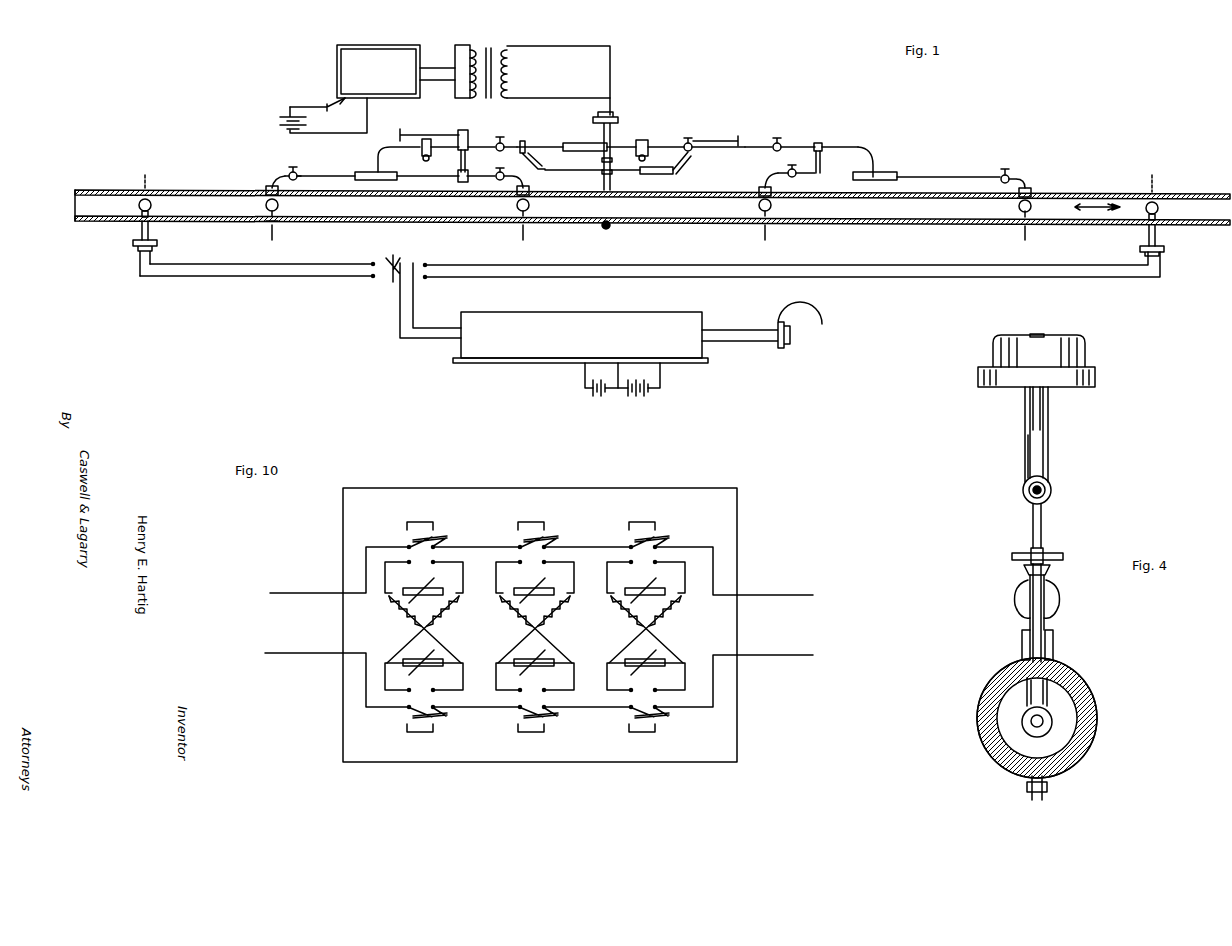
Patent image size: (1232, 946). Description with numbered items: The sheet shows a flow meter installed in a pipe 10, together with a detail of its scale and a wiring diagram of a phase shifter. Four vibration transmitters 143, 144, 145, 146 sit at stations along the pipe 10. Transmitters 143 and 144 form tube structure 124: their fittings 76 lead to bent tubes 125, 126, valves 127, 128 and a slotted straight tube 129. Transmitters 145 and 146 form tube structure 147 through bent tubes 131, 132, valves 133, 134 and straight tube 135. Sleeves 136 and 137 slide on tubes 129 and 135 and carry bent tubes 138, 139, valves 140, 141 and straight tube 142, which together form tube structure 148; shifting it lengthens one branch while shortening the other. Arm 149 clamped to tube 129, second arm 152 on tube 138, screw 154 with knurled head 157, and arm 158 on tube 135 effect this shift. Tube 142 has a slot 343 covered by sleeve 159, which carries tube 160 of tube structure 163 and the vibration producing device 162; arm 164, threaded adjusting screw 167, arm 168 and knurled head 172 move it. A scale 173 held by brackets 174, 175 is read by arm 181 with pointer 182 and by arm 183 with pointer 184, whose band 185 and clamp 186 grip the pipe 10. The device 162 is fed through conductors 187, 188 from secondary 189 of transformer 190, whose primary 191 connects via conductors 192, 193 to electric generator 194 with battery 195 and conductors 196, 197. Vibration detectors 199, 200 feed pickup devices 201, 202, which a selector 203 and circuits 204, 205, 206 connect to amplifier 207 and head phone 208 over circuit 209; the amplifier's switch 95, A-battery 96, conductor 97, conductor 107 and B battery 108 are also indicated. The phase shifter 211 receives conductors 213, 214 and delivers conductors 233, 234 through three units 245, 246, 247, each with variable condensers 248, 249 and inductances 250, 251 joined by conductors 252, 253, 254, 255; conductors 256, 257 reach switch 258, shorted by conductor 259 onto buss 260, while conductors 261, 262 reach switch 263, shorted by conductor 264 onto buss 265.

In FIG. 1, the pipe 10 is at (1075, 190).
In FIG. 4, the pipe 10 is at (1078, 692).
In FIG. 1, the fittings 76 is at (268, 188).
In FIG. 1, the switch 95 is at (586, 372).
In FIG. 1, the A-battery 96 is at (598, 398).
In FIG. 1, the conductor 97 is at (615, 391).
In FIG. 1, the conductor 107 is at (662, 385).
In FIG. 1, the B battery 108 is at (645, 398).
In FIG. 1, the tube structure 124 is at (333, 173).
In FIG. 1, the bent tube 125 is at (279, 177).
In FIG. 1, the bent tube 126 is at (520, 184).
In FIG. 1, the valve 127 is at (291, 171).
In FIG. 1, the valve 128 is at (496, 181).
In FIG. 1, the straight tube 129 is at (435, 175).
In FIG. 1, the bent tube 131 is at (772, 174).
In FIG. 4, the bent tube 131 is at (1028, 616).
In FIG. 1, the bent tube 132 is at (1022, 183).
In FIG. 1, the valve 133 is at (790, 172).
In FIG. 4, the valve 133 is at (1020, 592).
In FIG. 1, the valve 134 is at (1005, 170).
In FIG. 1, the straight tube 135 is at (926, 176).
In FIG. 1, the sleeve 136 is at (365, 172).
In FIG. 1, the sleeve 137 is at (886, 176).
In FIG. 1, the bent tube 138 is at (383, 160).
In FIG. 1, the bent tube 139 is at (870, 150).
In FIG. 1, the valve 140 is at (502, 140).
In FIG. 1, the valve 141 is at (779, 142).
In FIG. 1, the straight tube 142 is at (750, 145).
In FIG. 4, the straight tube 142 is at (1025, 500).
In FIG. 1, the vibration transmitter 143 is at (270, 226).
In FIG. 1, the vibration transmitter 144 is at (518, 211).
In FIG. 1, the vibration transmitter 145 is at (765, 210).
In FIG. 4, the vibration transmitter 145 is at (1047, 728).
In FIG. 1, the vibration transmitter 146 is at (1022, 210).
In FIG. 1, the tube structure 147 is at (958, 176).
In FIG. 1, the tube structure 148 is at (543, 145).
In FIG. 1, the arm 149 is at (472, 162).
In FIG. 1, the second arm 152 is at (427, 139).
In FIG. 1, the screw 154 is at (460, 132).
In FIG. 1, the knurled head 157 is at (400, 130).
In FIG. 1, the arm 158 is at (822, 146).
In FIG. 1, the sleeve 159 is at (590, 147).
In FIG. 4, the sleeve 159 is at (1053, 500).
In FIG. 4, the tube 160 is at (1050, 462).
In FIG. 1, the vibration producing device 162 is at (612, 118).
In FIG. 4, the vibration producing device 162 is at (1068, 355).
In FIG. 1, the tube structure 163 is at (612, 143).
In FIG. 4, the tube structure 163 is at (1050, 486).
In FIG. 1, the arm 164 is at (689, 140).
In FIG. 1, the threaded adjusting screw 167 is at (716, 140).
In FIG. 1, the arm 168 is at (646, 150).
In FIG. 1, the knurled head 172 is at (737, 138).
In FIG. 1, the scale 173 is at (645, 174).
In FIG. 1, the bracket 174 is at (690, 165).
In FIG. 1, the bracket 175 is at (527, 158).
In FIG. 4, the arm 181 is at (1042, 530).
In FIG. 4, the pointer 182 is at (1062, 561).
In FIG. 4, the arm 183 is at (1043, 622).
In FIG. 4, the pointer 184 is at (1056, 570).
In FIG. 4, the band 185 is at (985, 700).
In FIG. 1, the clamp 186 is at (610, 227).
In FIG. 4, the clamp 186 is at (1030, 787).
In FIG. 1, the conductor 187 is at (580, 46).
In FIG. 1, the conductor 188 is at (528, 98).
In FIG. 1, the secondary 189 is at (504, 68).
In FIG. 1, the transformer 190 is at (489, 48).
In FIG. 1, the primary 191 is at (474, 50).
In FIG. 1, the conductor 192 is at (440, 66).
In FIG. 1, the conductor 193 is at (429, 137).
In FIG. 1, the electric generator 194 is at (386, 58).
In FIG. 1, the battery 195 is at (283, 117).
In FIG. 1, the conductor 196 is at (315, 104).
In FIG. 1, the conductor 197 is at (330, 135).
In FIG. 1, the vibration detector 199 is at (152, 198).
In FIG. 1, the vibration detector 200 is at (1163, 200).
In FIG. 1, the electric pickup device 201 is at (134, 250).
In FIG. 1, the electric pickup device 202 is at (1165, 254).
In FIG. 1, the selector 203 is at (398, 276).
In FIG. 1, the circuit 204 is at (205, 280).
In FIG. 1, the circuit 205 is at (900, 280).
In FIG. 1, the circuit 206 is at (420, 345).
In FIG. 1, the amplifier 207 is at (695, 345).
In FIG. 1, the head phone 208 is at (790, 342).
In FIG. 1, the circuit 209 is at (737, 330).
In FIG. 10, the phase shifter 211 is at (722, 518).
In FIG. 10, the conductor 213 is at (800, 660).
In FIG. 10, the conductor 214 is at (800, 592).
In FIG. 10, the conductor 233 is at (285, 593).
In FIG. 10, the conductor 234 is at (277, 665).
In FIG. 10, the unit 245 is at (395, 646).
In FIG. 10, the unit 246 is at (530, 624).
In FIG. 10, the unit 247 is at (680, 648).
In FIG. 10, the variable condenser 248 is at (434, 578).
In FIG. 10, the variable condenser 249 is at (450, 680).
In FIG. 10, the inductance 250 is at (389, 600).
In FIG. 10, the inductance 251 is at (437, 618).
In FIG. 10, the conductor 252 is at (395, 590).
In FIG. 10, the conductor 253 is at (440, 588).
In FIG. 10, the conductor 254 is at (412, 648).
In FIG. 10, the conductor 255 is at (422, 640).
In FIG. 10, the conductor 256 is at (385, 565).
In FIG. 10, the conductor 257 is at (458, 587).
In FIG. 10, the double pole double throw switch 258 is at (440, 536).
In FIG. 10, the conductor 259 is at (424, 522).
In FIG. 10, the buss 260 is at (521, 546).
In FIG. 10, the conductor 261 is at (398, 707).
In FIG. 10, the conductor 262 is at (440, 675).
In FIG. 10, the double pole double throw switch 263 is at (410, 720).
In FIG. 10, the conductor 264 is at (430, 733).
In FIG. 10, the buss 265 is at (468, 716).
In FIG. 4, the slot 343 is at (1028, 470).